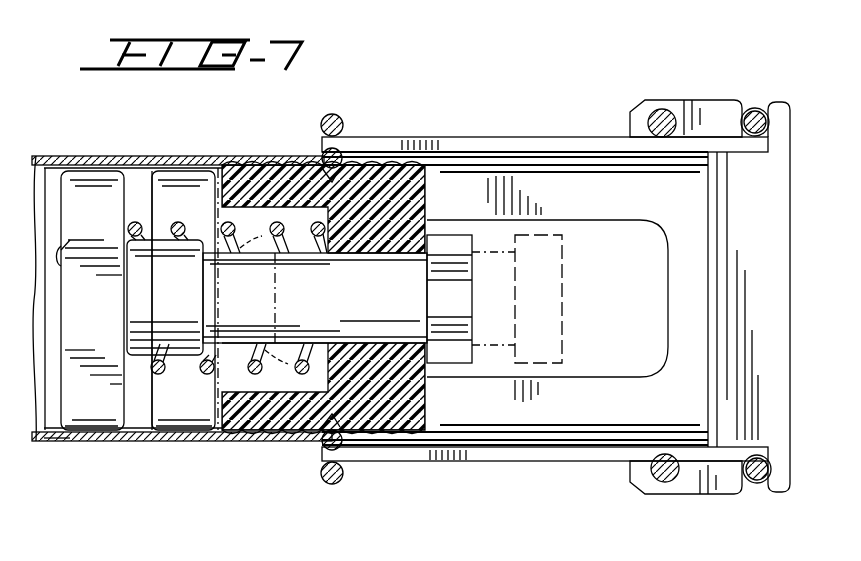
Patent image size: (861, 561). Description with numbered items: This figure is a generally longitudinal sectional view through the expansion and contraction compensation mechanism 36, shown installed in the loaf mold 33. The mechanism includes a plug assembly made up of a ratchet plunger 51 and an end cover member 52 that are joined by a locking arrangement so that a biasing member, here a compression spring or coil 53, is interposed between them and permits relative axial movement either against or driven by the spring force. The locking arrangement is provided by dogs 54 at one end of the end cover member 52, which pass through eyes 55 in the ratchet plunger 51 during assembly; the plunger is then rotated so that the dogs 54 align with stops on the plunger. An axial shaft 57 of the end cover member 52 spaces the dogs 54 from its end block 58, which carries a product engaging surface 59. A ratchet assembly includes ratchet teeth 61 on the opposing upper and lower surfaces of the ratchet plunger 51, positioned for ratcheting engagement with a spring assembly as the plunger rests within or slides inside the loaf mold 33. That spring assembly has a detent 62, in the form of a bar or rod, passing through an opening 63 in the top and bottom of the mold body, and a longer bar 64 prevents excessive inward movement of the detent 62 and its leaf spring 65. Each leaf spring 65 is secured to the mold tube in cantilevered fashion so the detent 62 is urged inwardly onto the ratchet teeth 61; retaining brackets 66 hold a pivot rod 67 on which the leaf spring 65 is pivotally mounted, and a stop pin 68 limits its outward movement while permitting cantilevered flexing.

The loaf mold 33 is at (66, 441).
The expansion and contraction compensation mechanism 36 is at (187, 462).
The ratchet plunger 51 is at (424, 176).
The end cover member 52 is at (107, 191).
The compression spring or coil 53 is at (178, 222).
The dogs 54 is at (460, 306).
The eyes 55 is at (227, 298).
The axial shaft 57 is at (322, 306).
The end block 58 is at (82, 311).
The product engaging surface 59 is at (68, 240).
The ratchet teeth 61 is at (266, 168).
The detent 62 is at (344, 168).
The opening 63 is at (462, 160).
The longer bar 64 is at (332, 114).
The leaf spring 65 is at (516, 137).
The retaining brackets 66 is at (766, 249).
The pivot rod 67 is at (757, 108).
The stop pin 68 is at (665, 482).